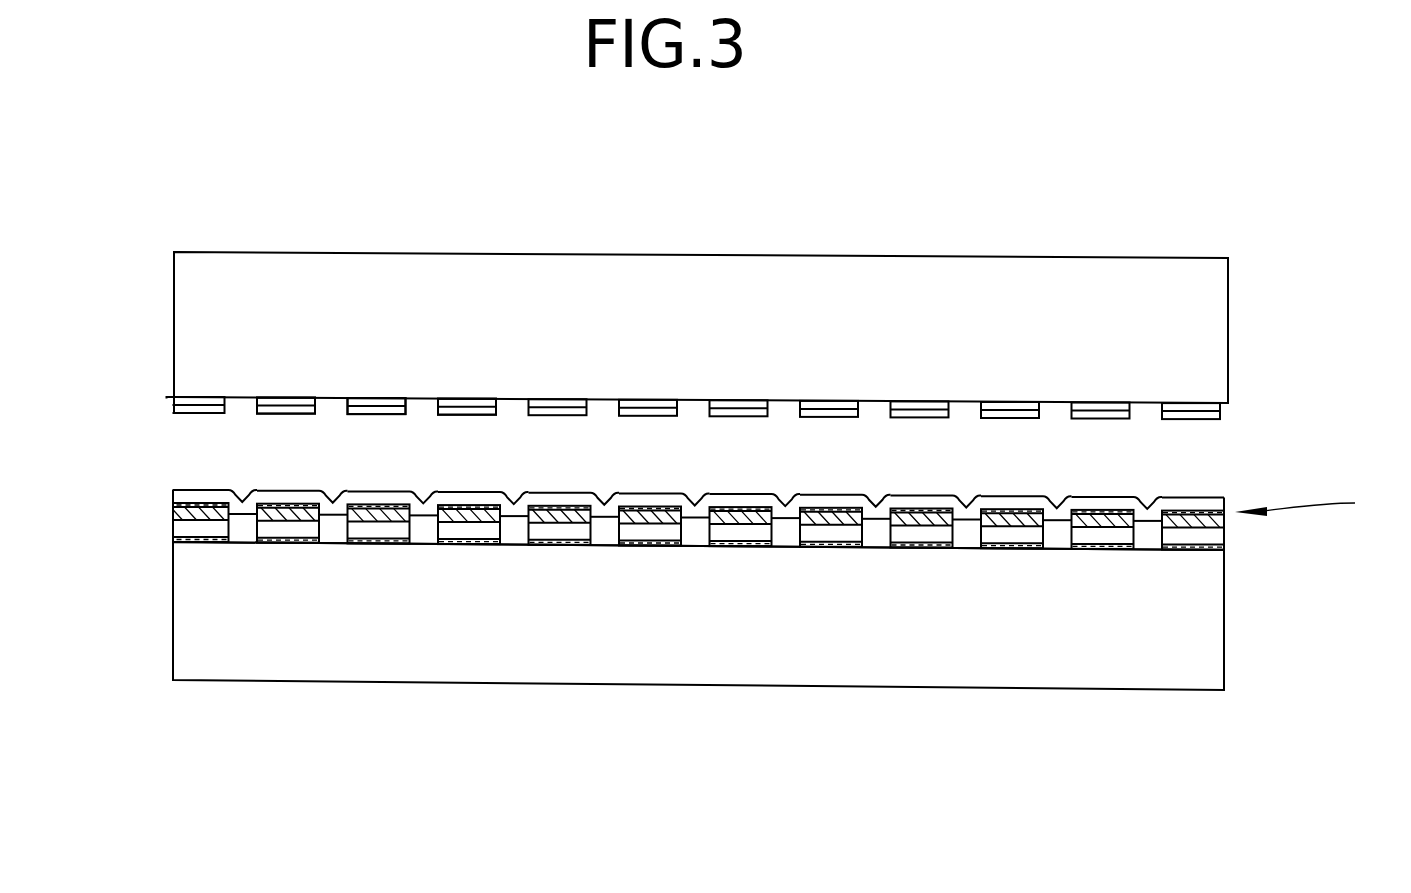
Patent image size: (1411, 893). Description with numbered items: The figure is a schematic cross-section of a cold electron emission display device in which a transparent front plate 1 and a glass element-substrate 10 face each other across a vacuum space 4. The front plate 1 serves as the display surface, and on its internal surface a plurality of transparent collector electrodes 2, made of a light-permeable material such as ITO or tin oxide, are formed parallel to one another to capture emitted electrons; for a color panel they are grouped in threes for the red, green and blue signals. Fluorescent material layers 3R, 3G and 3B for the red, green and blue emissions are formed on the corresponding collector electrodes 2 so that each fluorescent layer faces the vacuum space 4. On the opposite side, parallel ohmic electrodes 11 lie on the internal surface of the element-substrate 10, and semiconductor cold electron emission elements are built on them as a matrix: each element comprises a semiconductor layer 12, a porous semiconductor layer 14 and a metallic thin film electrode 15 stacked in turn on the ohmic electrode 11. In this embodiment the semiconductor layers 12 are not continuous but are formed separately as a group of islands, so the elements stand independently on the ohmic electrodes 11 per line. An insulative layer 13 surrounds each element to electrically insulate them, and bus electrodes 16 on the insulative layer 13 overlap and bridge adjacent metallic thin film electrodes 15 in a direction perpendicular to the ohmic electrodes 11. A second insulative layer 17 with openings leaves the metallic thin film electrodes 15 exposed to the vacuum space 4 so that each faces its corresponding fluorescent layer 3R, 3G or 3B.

The transparent front plate 1 is at (1141, 265).
The transparent collector electrodes 2 is at (172, 400).
The fluorescent material layer for red emission 3R is at (282, 403).
The fluorescent material layer for green emission 3G is at (380, 403).
The fluorescent material layer for blue emission 3B is at (467, 403).
The vacuum space 4 is at (1290, 475).
The element-substrate 10 is at (178, 620).
The ohmic electrodes 11 is at (381, 543).
The semiconductor layer 12 is at (178, 528).
The insulative layer 13 is at (1150, 543).
The porous semiconductor layer 14 is at (185, 515).
The metallic thin film electrode 15 is at (198, 495).
The bus electrodes 16 is at (1314, 502).
The second insulative layer 17 is at (378, 491).